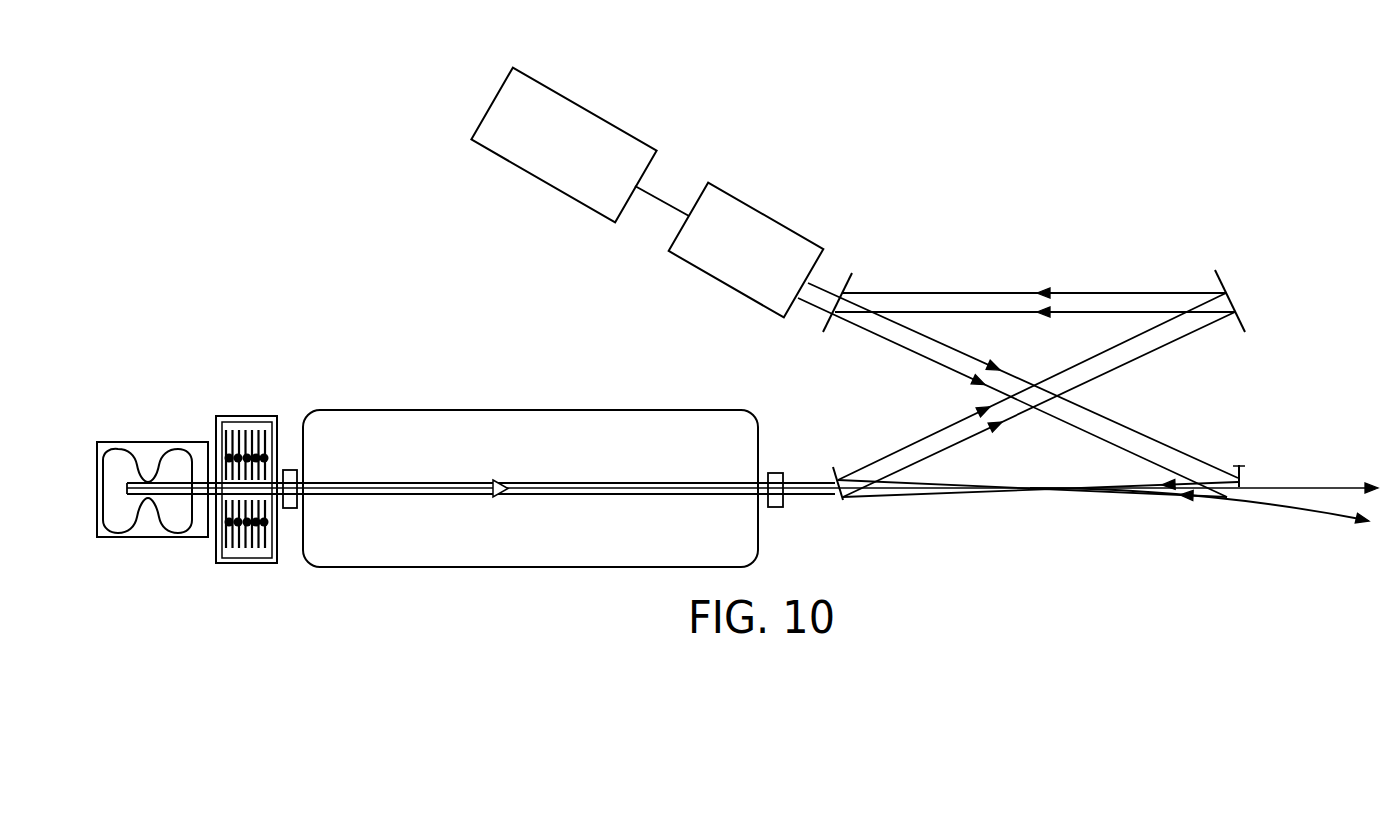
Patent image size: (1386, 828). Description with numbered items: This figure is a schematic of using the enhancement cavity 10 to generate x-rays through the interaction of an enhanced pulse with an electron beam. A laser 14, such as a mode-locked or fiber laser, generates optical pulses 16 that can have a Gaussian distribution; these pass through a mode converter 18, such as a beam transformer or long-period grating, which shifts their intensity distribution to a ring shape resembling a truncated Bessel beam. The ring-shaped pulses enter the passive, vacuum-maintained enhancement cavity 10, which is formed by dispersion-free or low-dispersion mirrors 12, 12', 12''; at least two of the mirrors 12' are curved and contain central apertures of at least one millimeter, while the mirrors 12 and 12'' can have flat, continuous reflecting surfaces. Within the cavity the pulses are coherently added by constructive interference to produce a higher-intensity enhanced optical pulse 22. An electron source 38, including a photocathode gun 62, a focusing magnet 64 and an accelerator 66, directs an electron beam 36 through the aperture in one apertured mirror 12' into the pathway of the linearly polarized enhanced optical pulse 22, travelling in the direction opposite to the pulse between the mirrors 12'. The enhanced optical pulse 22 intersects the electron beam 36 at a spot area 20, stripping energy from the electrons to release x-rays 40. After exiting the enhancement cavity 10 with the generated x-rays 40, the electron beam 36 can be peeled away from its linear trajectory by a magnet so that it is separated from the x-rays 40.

The enhancement cavity 10 is at (1232, 171).
The mirror 12 is at (840, 325).
The curved apertured mirror 12' is at (1035, 508).
The mirror 12'' is at (1254, 293).
The laser 14 is at (563, 145).
The optical pulses 16 is at (673, 203).
The mode converter 18 is at (746, 250).
The spot area 20 is at (1030, 492).
The enhanced optical pulse 22 is at (917, 327).
The electron beam 36 is at (1317, 503).
The electron source 38 is at (280, 281).
The x-rays 40 is at (1327, 488).
The photocathode gun 62 is at (100, 535).
The focusing magnet 64 is at (233, 422).
The accelerator 66 is at (415, 448).